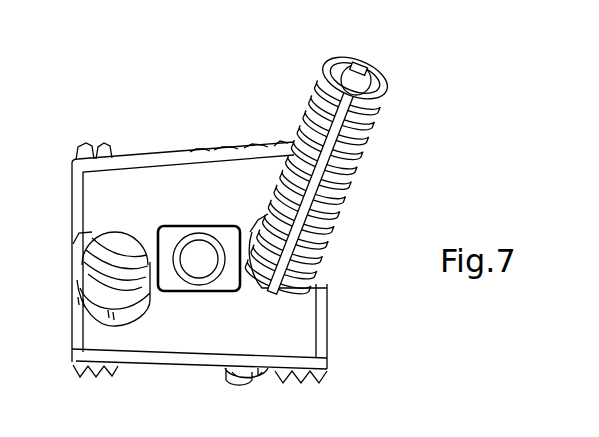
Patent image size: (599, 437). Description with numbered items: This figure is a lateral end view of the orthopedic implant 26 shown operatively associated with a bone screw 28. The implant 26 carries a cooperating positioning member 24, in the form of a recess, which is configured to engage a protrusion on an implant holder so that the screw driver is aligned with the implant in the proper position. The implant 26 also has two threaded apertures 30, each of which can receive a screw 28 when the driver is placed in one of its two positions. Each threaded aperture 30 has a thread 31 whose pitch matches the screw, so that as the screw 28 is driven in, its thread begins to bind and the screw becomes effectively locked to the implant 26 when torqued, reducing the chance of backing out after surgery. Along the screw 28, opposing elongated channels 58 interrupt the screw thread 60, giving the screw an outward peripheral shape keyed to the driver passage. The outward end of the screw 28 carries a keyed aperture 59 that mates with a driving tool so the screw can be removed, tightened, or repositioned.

The cooperating positioning member 24 is at (197, 226).
The orthopedic implant 26 is at (180, 373).
The screw 28 is at (340, 150).
The threaded aperture 30 is at (200, 254).
The thread 31 is at (100, 258).
The elongated channel 58 is at (366, 58).
The keyed aperture 59 is at (352, 78).
The screw thread 60 is at (355, 185).